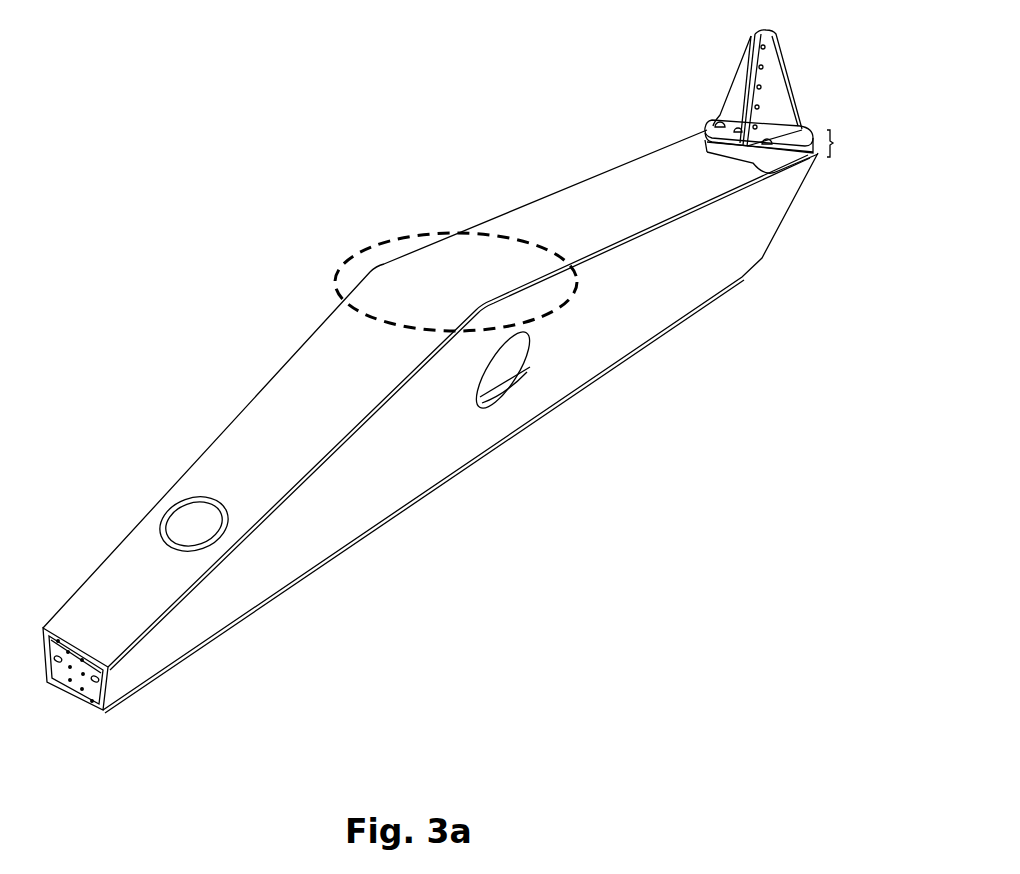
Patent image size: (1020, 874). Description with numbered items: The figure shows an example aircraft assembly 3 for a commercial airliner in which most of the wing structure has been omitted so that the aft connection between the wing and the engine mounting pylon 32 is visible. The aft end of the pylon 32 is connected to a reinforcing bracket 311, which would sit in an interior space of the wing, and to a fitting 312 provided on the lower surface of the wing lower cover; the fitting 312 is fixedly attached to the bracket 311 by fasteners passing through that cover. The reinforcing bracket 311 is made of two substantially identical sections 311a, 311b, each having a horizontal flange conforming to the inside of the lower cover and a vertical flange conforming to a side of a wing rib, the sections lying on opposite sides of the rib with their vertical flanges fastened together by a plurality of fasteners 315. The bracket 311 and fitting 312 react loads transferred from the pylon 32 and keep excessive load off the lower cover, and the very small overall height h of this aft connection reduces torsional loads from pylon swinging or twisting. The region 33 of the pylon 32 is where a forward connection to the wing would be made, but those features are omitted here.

The aircraft assembly 3 is at (226, 150).
The engine mounting pylon 32 is at (587, 212).
The region of the pylon 33 is at (335, 278).
The reinforcing bracket 311 is at (700, 83).
The first section of the reinforcing bracket 311a is at (733, 95).
The second section of the reinforcing bracket 311b is at (772, 108).
The fitting 312 is at (767, 167).
The fasteners 315 is at (759, 87).